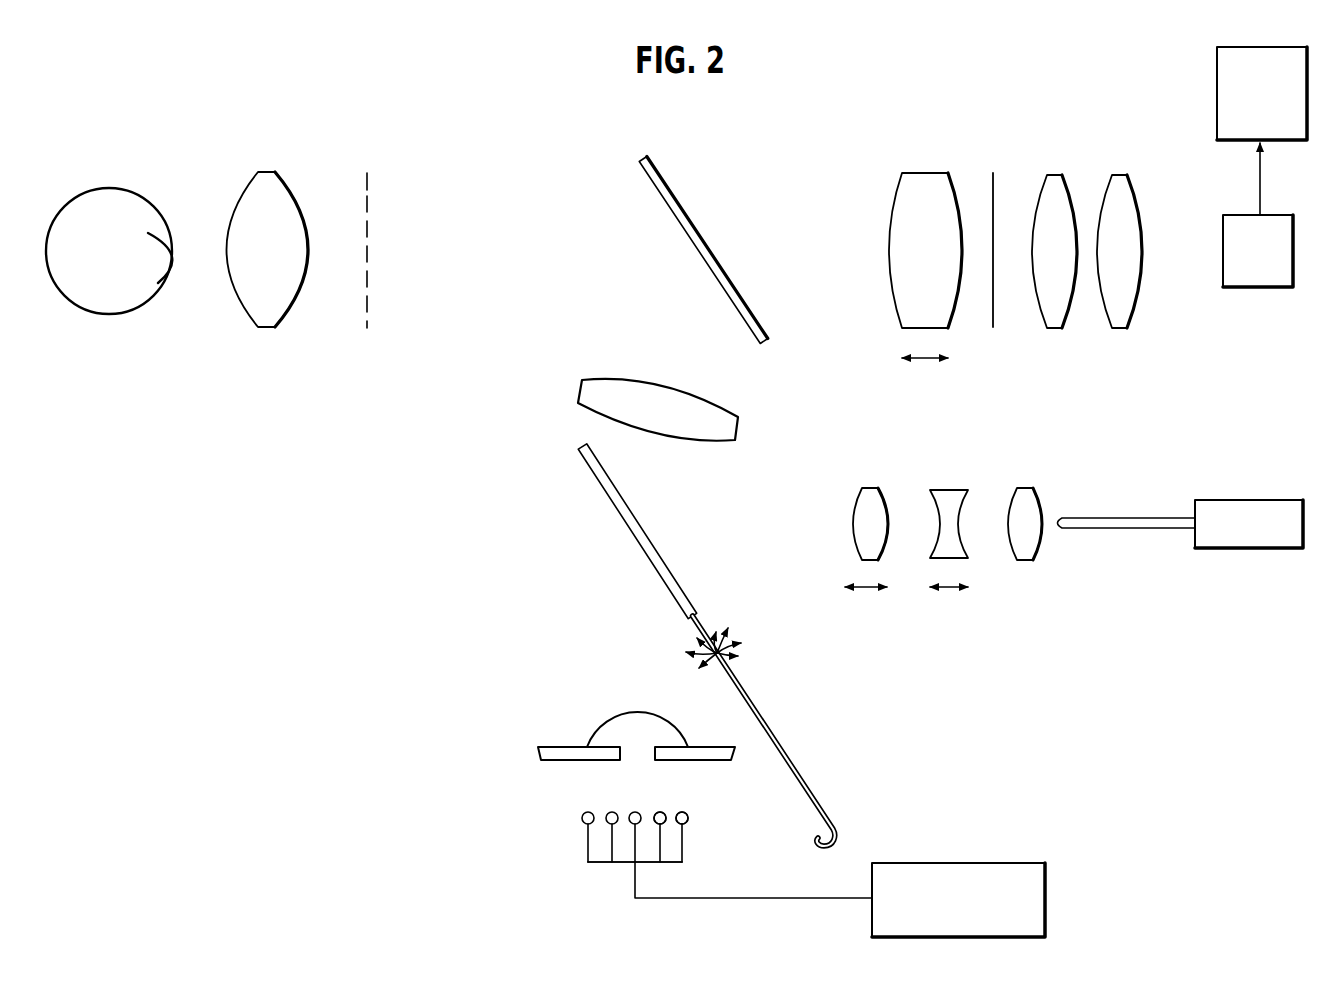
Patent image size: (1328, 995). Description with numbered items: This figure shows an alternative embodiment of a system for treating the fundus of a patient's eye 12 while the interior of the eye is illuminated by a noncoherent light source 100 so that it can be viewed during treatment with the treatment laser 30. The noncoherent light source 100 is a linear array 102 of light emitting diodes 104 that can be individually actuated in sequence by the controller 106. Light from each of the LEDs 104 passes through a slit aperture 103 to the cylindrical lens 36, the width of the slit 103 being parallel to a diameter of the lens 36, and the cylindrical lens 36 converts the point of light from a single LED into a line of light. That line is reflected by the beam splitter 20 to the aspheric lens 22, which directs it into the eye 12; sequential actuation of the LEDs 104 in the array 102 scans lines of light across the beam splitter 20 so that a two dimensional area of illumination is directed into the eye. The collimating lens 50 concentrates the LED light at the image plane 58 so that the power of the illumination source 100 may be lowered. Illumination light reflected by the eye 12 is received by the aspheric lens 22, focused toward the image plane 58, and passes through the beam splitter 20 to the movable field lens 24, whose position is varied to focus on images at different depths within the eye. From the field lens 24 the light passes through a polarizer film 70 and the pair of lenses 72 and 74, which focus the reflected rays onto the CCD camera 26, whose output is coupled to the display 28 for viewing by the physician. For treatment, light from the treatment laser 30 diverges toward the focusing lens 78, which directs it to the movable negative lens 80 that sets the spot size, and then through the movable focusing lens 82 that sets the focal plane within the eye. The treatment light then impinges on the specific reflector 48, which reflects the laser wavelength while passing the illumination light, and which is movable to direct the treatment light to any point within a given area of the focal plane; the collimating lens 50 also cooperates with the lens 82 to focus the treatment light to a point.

The eye 12 is at (145, 200).
The aspheric lens 22 is at (274, 183).
The image plane 58 is at (368, 187).
The beam splitter 20 is at (675, 200).
The collimating lens 50 is at (721, 437).
The specific reflector 48 is at (697, 607).
The cylindrical lens 36 is at (608, 724).
The slit aperture 103 is at (630, 767).
The noncoherent light source 100 is at (577, 849).
The light emitting diodes 104 is at (661, 810).
The linear array 102 is at (691, 834).
The controller 106 is at (1003, 868).
The movable field lens 24 is at (930, 180).
The polarizer film 70 is at (996, 183).
The lens 72 is at (1058, 181).
The lens 74 is at (1124, 184).
The display 28 is at (1217, 96).
The CCD camera 26 is at (1258, 288).
The focusing lens 82 is at (878, 495).
The negative lens 80 is at (964, 492).
The focusing lens 78 is at (1032, 495).
The treatment laser 30 is at (1218, 500).